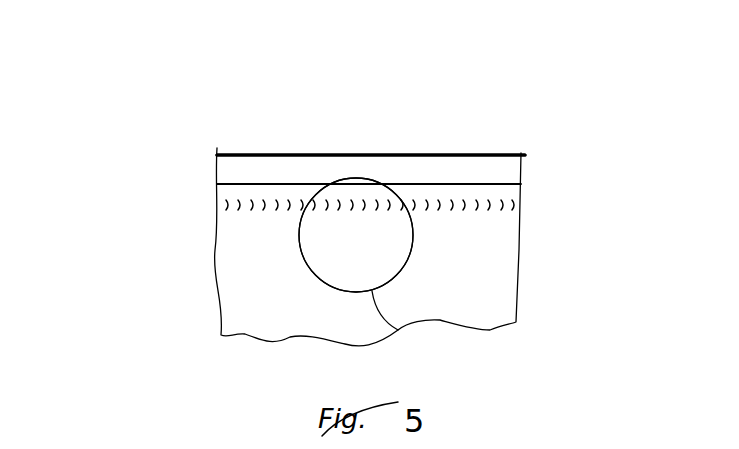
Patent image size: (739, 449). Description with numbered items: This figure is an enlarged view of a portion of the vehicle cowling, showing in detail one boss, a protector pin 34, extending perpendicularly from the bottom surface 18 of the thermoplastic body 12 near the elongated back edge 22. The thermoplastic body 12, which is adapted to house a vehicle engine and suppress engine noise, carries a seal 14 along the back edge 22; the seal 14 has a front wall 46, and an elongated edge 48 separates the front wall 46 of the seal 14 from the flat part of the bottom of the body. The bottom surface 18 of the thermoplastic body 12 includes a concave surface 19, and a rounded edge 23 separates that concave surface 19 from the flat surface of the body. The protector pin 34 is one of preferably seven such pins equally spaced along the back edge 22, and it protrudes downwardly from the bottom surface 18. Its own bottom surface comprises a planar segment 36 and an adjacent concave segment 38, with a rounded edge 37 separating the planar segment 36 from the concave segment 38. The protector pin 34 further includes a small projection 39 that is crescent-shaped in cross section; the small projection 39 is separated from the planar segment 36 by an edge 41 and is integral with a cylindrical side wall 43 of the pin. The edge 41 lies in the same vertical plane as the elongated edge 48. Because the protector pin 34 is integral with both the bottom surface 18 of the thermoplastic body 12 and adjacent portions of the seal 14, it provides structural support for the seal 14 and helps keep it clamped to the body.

The thermoplastic body 12 is at (183, 262).
The seal 14 is at (192, 165).
The bottom surface 18 is at (457, 306).
The concave surface 19 is at (457, 257).
The elongated back edge 22 is at (492, 124).
The rounded edge 23 is at (490, 205).
The protector pin 34 is at (330, 273).
The planar segment 36 is at (308, 183).
The rounded edge 37 is at (371, 209).
The concave segment 38 is at (299, 268).
The small projection 39 is at (376, 186).
The edge 41 is at (357, 178).
The cylindrical side wall 43 is at (398, 330).
The front wall 46 is at (298, 165).
The elongated edge 48 is at (492, 185).